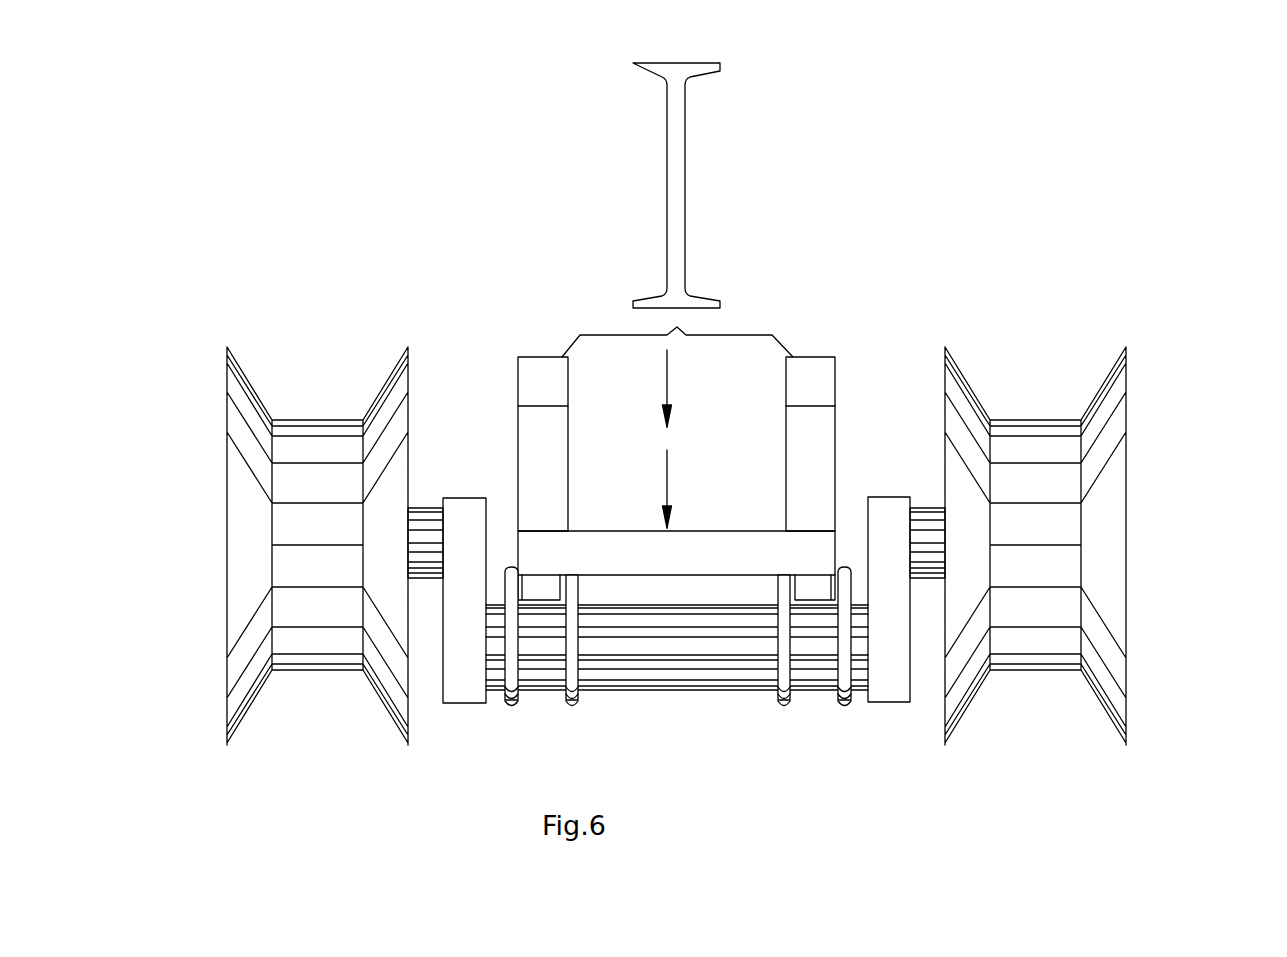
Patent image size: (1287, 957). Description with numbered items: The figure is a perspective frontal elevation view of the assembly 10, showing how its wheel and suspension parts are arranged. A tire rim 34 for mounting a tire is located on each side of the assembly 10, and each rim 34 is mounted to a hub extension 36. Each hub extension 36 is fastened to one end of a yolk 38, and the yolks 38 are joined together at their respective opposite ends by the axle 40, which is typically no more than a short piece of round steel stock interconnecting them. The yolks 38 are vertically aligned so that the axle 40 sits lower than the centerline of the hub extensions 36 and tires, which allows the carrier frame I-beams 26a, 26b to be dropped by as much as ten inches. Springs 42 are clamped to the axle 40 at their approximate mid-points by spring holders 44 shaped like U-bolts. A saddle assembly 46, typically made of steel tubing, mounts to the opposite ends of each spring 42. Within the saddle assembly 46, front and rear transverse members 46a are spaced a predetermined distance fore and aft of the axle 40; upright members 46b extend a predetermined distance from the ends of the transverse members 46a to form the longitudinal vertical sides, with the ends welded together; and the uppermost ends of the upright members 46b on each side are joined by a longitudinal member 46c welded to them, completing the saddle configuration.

The assembly 10 is at (762, 305).
The carrier frame I-beam 26a is at (745, 185).
The carrier frame I-beam 26b is at (676, 185).
The tire rim 34 is at (240, 520).
The hub extension 36 is at (425, 508).
The yolk 38 is at (885, 525).
The axle 40 is at (665, 682).
The spring 42 is at (540, 585).
The spring holder 44 is at (512, 702).
The saddle assembly 46 is at (667, 330).
The transverse member 46a is at (705, 548).
The upright member 46b is at (568, 418).
The longitudinal member 46c is at (535, 368).